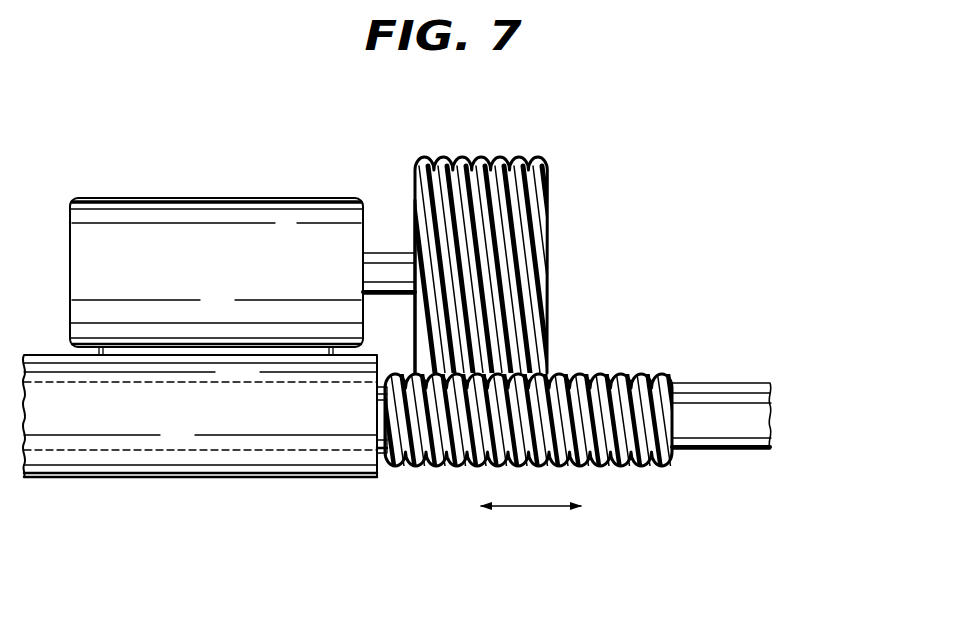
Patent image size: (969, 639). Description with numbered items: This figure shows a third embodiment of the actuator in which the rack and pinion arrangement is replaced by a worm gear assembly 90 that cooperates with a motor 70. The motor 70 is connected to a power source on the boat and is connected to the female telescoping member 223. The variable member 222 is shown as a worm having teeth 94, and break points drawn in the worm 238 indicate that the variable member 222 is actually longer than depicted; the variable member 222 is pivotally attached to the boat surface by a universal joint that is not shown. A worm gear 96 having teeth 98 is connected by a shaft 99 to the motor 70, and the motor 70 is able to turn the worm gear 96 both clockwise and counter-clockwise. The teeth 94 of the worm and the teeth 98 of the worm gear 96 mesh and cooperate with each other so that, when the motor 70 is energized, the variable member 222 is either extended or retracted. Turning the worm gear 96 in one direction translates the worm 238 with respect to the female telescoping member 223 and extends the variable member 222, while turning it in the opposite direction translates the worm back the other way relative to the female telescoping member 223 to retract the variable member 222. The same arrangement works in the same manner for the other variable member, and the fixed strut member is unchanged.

The motor 70 is at (203, 213).
The worm gear assembly 90 is at (646, 350).
The teeth 94 is at (633, 468).
The worm gear 96 is at (508, 158).
The teeth 98 is at (528, 264).
The shaft 99 is at (390, 251).
The variable member 222 is at (287, 556).
The female telescoping member 223 is at (176, 480).
The worm 238 is at (701, 433).